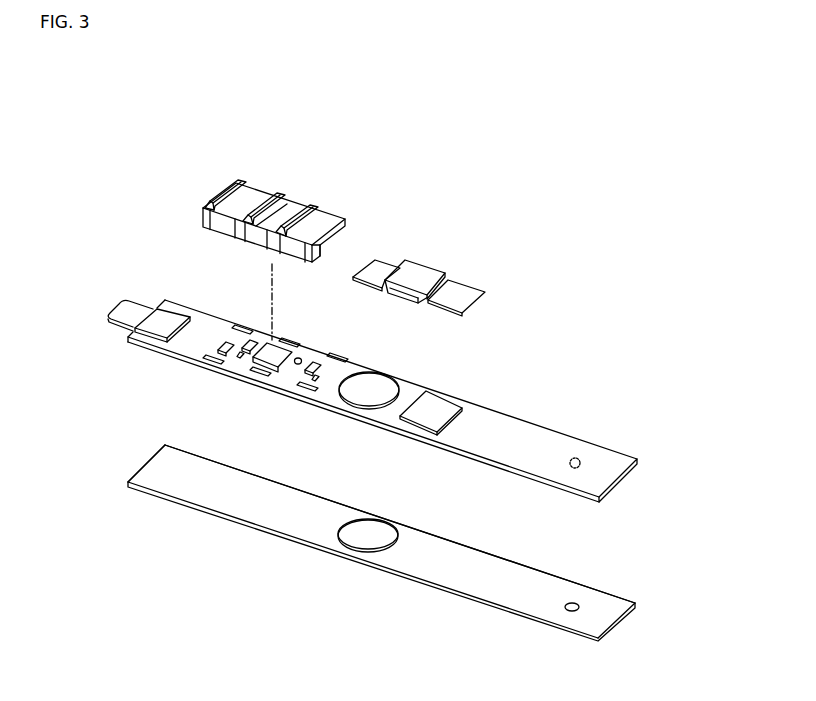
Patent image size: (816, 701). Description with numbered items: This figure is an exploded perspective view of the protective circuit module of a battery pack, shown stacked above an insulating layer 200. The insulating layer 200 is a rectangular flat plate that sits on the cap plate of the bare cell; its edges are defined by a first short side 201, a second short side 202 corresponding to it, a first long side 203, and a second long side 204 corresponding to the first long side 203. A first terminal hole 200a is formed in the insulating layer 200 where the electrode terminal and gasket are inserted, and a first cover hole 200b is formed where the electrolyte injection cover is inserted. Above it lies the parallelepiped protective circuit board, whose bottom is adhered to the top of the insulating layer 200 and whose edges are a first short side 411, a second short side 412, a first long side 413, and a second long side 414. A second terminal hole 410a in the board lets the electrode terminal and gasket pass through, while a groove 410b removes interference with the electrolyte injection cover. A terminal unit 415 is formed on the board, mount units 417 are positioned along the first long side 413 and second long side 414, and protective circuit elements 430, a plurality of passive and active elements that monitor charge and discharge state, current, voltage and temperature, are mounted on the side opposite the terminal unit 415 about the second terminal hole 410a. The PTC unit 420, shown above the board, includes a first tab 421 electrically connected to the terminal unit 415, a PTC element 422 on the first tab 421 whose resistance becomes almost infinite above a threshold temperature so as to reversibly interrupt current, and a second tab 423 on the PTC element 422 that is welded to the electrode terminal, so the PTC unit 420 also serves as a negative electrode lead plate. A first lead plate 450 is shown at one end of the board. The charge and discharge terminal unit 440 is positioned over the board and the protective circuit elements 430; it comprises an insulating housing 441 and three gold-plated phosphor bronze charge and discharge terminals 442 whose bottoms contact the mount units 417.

The charge and discharge terminal unit 440 is at (274, 184).
The housing 441 is at (268, 187).
The charge and discharge terminals 442 is at (281, 202).
The PTC unit 420 is at (436, 238).
The first tab 421 is at (468, 285).
The PTC element 422 is at (432, 265).
The second tab 423 is at (383, 265).
The first lead plate 450 is at (123, 310).
The first short side 411 is at (127, 337).
The second short side 412 is at (607, 500).
The first long side 413 is at (518, 417).
The second long side 414 is at (404, 432).
The terminal unit 415 is at (440, 405).
The mount units 417 is at (203, 360).
The protective circuit elements 430 is at (293, 362).
The second terminal hole 410a is at (380, 388).
The groove 410b is at (581, 459).
The insulating layer 200 is at (163, 457).
The first short side 201 is at (133, 472).
The second short side 202 is at (617, 630).
The first long side 203 is at (482, 550).
The second long side 204 is at (308, 547).
The first terminal hole 200a is at (384, 526).
The first cover hole 200b is at (584, 606).